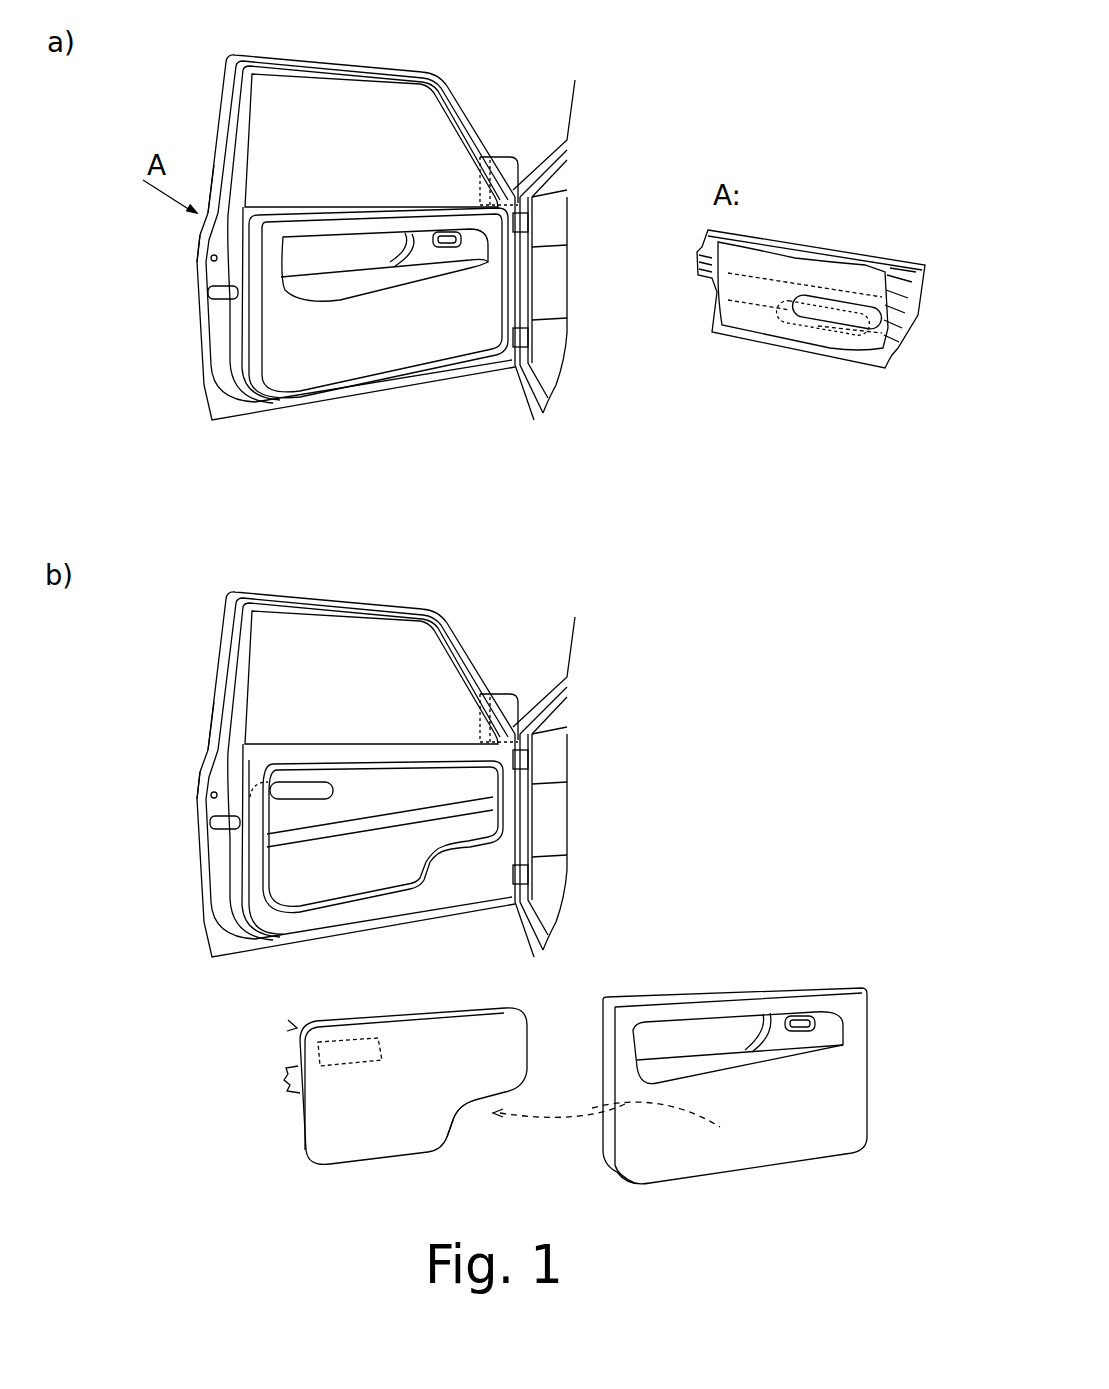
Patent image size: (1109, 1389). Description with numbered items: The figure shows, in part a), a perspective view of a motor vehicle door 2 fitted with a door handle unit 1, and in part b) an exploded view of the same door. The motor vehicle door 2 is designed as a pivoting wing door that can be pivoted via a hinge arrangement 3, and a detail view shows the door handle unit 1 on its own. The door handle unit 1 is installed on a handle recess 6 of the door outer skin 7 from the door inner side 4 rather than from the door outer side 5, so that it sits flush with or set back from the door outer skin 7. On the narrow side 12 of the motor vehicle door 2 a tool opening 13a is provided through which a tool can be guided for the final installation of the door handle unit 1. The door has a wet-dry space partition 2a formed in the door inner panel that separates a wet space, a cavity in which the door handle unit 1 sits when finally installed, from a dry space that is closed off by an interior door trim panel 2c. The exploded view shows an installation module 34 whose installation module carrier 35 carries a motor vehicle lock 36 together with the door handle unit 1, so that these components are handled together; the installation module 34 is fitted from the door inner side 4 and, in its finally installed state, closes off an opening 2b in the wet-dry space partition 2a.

The door handle unit 1 is at (920, 328).
The motor vehicle door 2 is at (223, 82).
The wet-dry space partition 2a is at (345, 1030).
The opening 2b is at (309, 372).
The interior door trim panel 2c is at (753, 1143).
The hinge arrangement 3 is at (506, 390).
The door inner side 4 is at (445, 427).
The door outer side 5 is at (201, 128).
The handle recess 6 is at (312, 792).
The door outer skin 7 is at (206, 400).
The narrow side 12 is at (214, 244).
The tool opening 13a is at (210, 259).
The installation module 34 is at (349, 1180).
The installation module carrier 35 is at (423, 1107).
The motor vehicle lock 36 is at (205, 291).